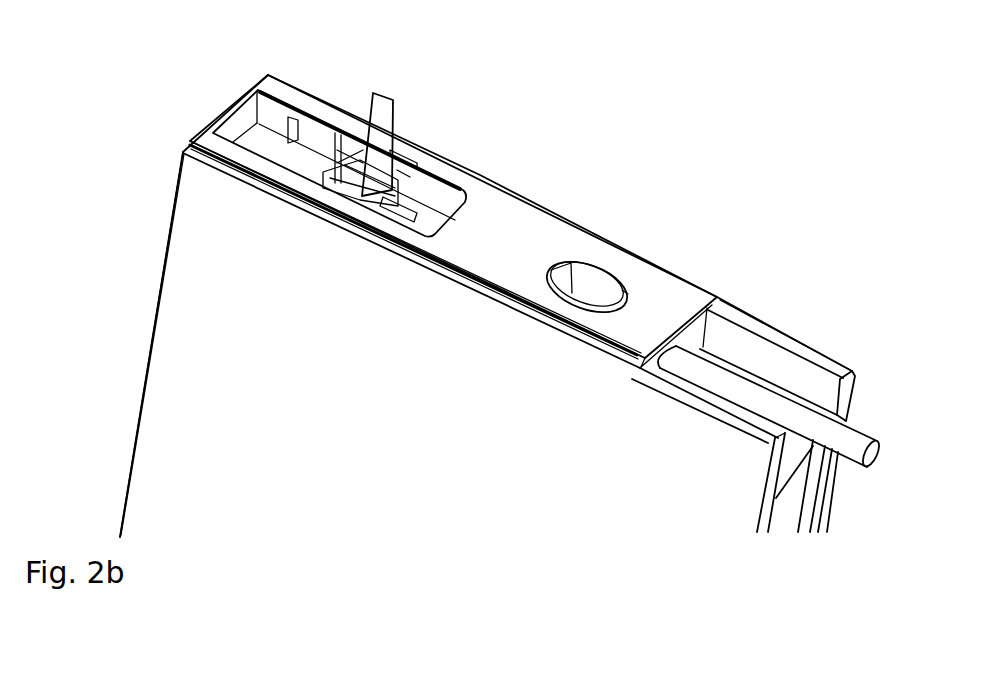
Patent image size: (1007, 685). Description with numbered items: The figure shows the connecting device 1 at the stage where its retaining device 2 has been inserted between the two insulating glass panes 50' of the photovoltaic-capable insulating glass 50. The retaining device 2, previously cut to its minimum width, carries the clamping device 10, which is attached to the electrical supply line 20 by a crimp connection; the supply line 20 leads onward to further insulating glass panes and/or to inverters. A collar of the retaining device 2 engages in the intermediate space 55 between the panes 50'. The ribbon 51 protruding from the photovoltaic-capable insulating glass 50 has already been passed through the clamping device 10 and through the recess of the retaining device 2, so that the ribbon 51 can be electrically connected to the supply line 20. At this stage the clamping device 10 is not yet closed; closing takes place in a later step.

The connecting device 1 is at (569, 152).
The retaining device 2 is at (643, 275).
The clamping device 10 is at (343, 152).
The electrical supply line 20 is at (730, 386).
The photovoltaic-capable insulating glass 50 is at (456, 309).
The insulating glass panes 50' is at (471, 344).
The ribbon 51 is at (385, 126).
The intermediate space 55 is at (783, 513).